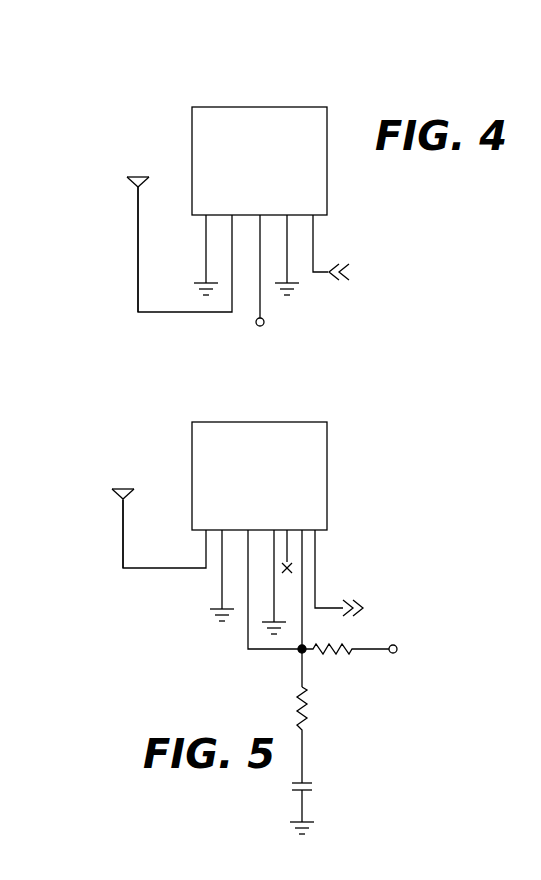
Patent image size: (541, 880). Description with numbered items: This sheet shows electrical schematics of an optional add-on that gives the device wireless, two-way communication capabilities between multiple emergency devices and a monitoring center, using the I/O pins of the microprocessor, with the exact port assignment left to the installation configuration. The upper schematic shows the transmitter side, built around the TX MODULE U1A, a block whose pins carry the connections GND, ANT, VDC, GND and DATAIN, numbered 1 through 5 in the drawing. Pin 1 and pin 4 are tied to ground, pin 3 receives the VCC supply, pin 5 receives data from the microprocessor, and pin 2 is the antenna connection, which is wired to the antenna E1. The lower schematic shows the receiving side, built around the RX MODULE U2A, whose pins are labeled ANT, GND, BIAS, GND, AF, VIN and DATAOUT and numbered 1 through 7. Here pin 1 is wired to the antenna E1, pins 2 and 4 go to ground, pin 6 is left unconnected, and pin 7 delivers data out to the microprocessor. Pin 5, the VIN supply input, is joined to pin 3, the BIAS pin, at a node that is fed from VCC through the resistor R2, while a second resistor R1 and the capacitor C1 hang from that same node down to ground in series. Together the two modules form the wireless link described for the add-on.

In FIG. 4, the pin 1 (GND in FIG. 4 / ANT in FIG. 5) 1 is at (203, 255).
In FIG. 5, the pin 1 (GND in FIG. 4 / ANT in FIG. 5) 1 is at (164, 534).
In FIG. 4, the pin 2 (ANT in FIG. 4 / GND in FIG. 5) 2 is at (185, 249).
In FIG. 5, the pin 2 (ANT in FIG. 4 / GND in FIG. 5) 2 is at (219, 575).
In FIG. 4, the pin 3 (VDC in FIG. 4 / BIAS in FIG. 5) 3 is at (257, 280).
In FIG. 5, the pin 3 (VDC in FIG. 4 / BIAS in FIG. 5) 3 is at (266, 589).
In FIG. 4, the pin 4 GND 4 is at (284, 255).
In FIG. 5, the pin 4 GND 4 is at (271, 582).
In FIG. 4, the pin 5 (DATAIN in FIG. 4 / VIN in FIG. 5) 5 is at (364, 247).
In FIG. 5, the pin 5 (DATAIN in FIG. 4 / VIN in FIG. 5) 5 is at (295, 608).
In FIG. 5, the pin 6 AF 6 is at (281, 551).
In FIG. 5, the pin 7 DATAOUT 7 is at (366, 573).
In FIG. 4, the TX MODULE U1A is at (258, 143).
In FIG. 5, the RX MODULE U2A is at (258, 460).
In FIG. 4, the antenna E1 is at (135, 222).
In FIG. 5, the antenna E1 is at (122, 509).
In FIG. 5, the resistor R1 is at (335, 735).
In FIG. 5, the resistor R2 is at (367, 668).
In FIG. 5, the capacitor C1 is at (318, 803).